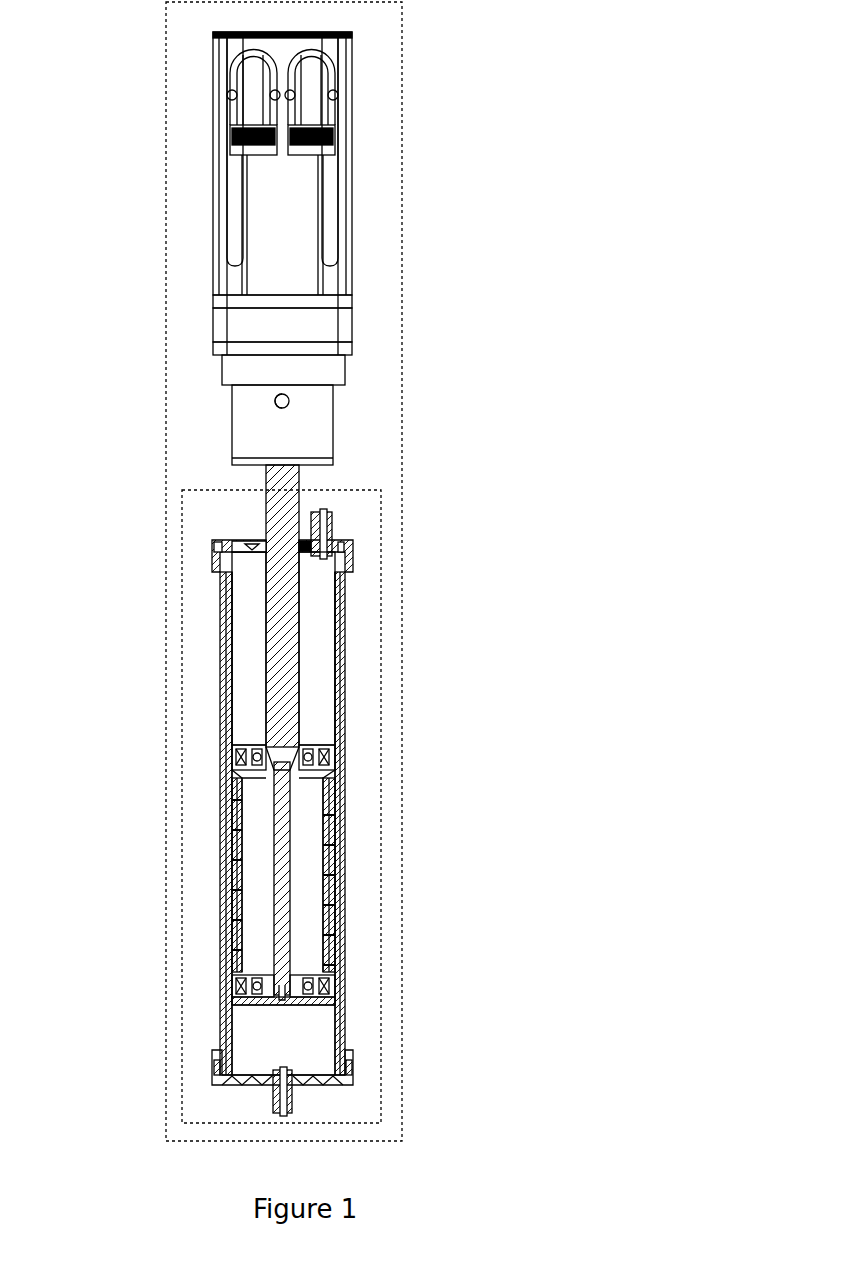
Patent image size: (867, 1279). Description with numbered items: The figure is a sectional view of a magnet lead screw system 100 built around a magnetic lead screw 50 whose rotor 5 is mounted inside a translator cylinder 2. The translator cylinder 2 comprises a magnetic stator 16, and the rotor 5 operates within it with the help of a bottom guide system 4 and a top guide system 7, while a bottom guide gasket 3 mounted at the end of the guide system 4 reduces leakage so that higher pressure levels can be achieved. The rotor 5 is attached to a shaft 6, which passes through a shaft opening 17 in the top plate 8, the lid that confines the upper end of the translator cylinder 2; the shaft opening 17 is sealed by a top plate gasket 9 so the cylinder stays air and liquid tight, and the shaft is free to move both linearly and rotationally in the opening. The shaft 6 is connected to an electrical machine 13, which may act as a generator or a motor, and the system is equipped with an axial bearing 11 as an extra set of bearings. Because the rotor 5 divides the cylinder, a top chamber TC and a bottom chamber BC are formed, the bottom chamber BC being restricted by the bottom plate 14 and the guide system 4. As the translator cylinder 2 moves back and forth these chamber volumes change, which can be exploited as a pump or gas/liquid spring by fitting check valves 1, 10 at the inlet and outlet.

The magnet lead screw system 100 is at (167, 100).
The magnetic lead screw 50 is at (183, 491).
The electrical machine 13 is at (284, 245).
The axial bearing 11 is at (272, 433).
The shaft opening 17 is at (265, 540).
The top plate 8 is at (227, 541).
The top plate gasket 9 is at (349, 556).
The check valve 10 is at (333, 525).
The shaft 6 is at (291, 690).
The translator cylinder 2 is at (348, 1033).
The magnetic stator 16 is at (222, 692).
The top chamber TC is at (256, 631).
The top guide system 7 is at (231, 752).
The rotor 5 is at (231, 873).
The bottom guide system 4 is at (237, 985).
The bottom guide gasket 3 is at (338, 1000).
The bottom chamber BC is at (292, 1052).
The bottom plate 14 is at (210, 1077).
The check valve 1 is at (270, 1093).